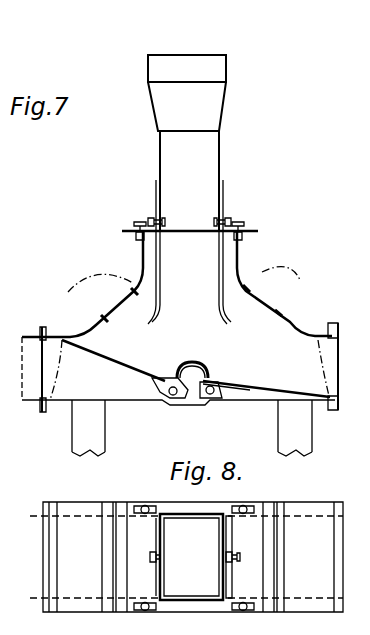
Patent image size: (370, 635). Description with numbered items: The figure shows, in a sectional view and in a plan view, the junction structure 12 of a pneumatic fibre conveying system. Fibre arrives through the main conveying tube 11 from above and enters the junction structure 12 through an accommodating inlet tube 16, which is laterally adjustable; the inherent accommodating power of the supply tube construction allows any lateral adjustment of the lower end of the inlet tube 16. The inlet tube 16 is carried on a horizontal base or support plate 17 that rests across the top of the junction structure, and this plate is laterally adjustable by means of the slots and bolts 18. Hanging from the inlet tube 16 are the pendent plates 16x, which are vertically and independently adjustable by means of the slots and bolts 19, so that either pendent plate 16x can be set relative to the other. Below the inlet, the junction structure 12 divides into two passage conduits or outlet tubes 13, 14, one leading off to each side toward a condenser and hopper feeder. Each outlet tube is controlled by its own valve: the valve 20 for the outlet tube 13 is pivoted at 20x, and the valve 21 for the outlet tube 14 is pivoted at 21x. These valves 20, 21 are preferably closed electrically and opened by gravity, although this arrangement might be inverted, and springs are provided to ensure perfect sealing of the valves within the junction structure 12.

In FIG. 7, the main conveying tube 11 is at (230, 50).
In FIG. 7, the junction structure 12 is at (184, 264).
In FIG. 7, the outlet tube 13 is at (33, 393).
In FIG. 7, the outlet tube 14 is at (318, 332).
In FIG. 7, the inlet tube 16 is at (189, 181).
In FIG. 8, the inlet tube 16 is at (191, 557).
In FIG. 7, the pendent plates 16x is at (158, 290).
In FIG. 8, the pendent plates 16x is at (240, 540).
In FIG. 7, the horizontal base or support plate 17 is at (132, 238).
In FIG. 8, the horizontal base or support plate 17 is at (138, 558).
In FIG. 7, the slots and bolts 18 is at (141, 215).
In FIG. 8, the slots and bolts 18 is at (150, 501).
In FIG. 7, the slots and bolts 19 is at (152, 214).
In FIG. 8, the slots and bolts 19 is at (155, 543).
In FIG. 7, the valve 20 is at (128, 368).
In FIG. 7, the pivot 20x is at (176, 398).
In FIG. 7, the valve 21 is at (285, 392).
In FIG. 7, the pivot 21x is at (214, 398).